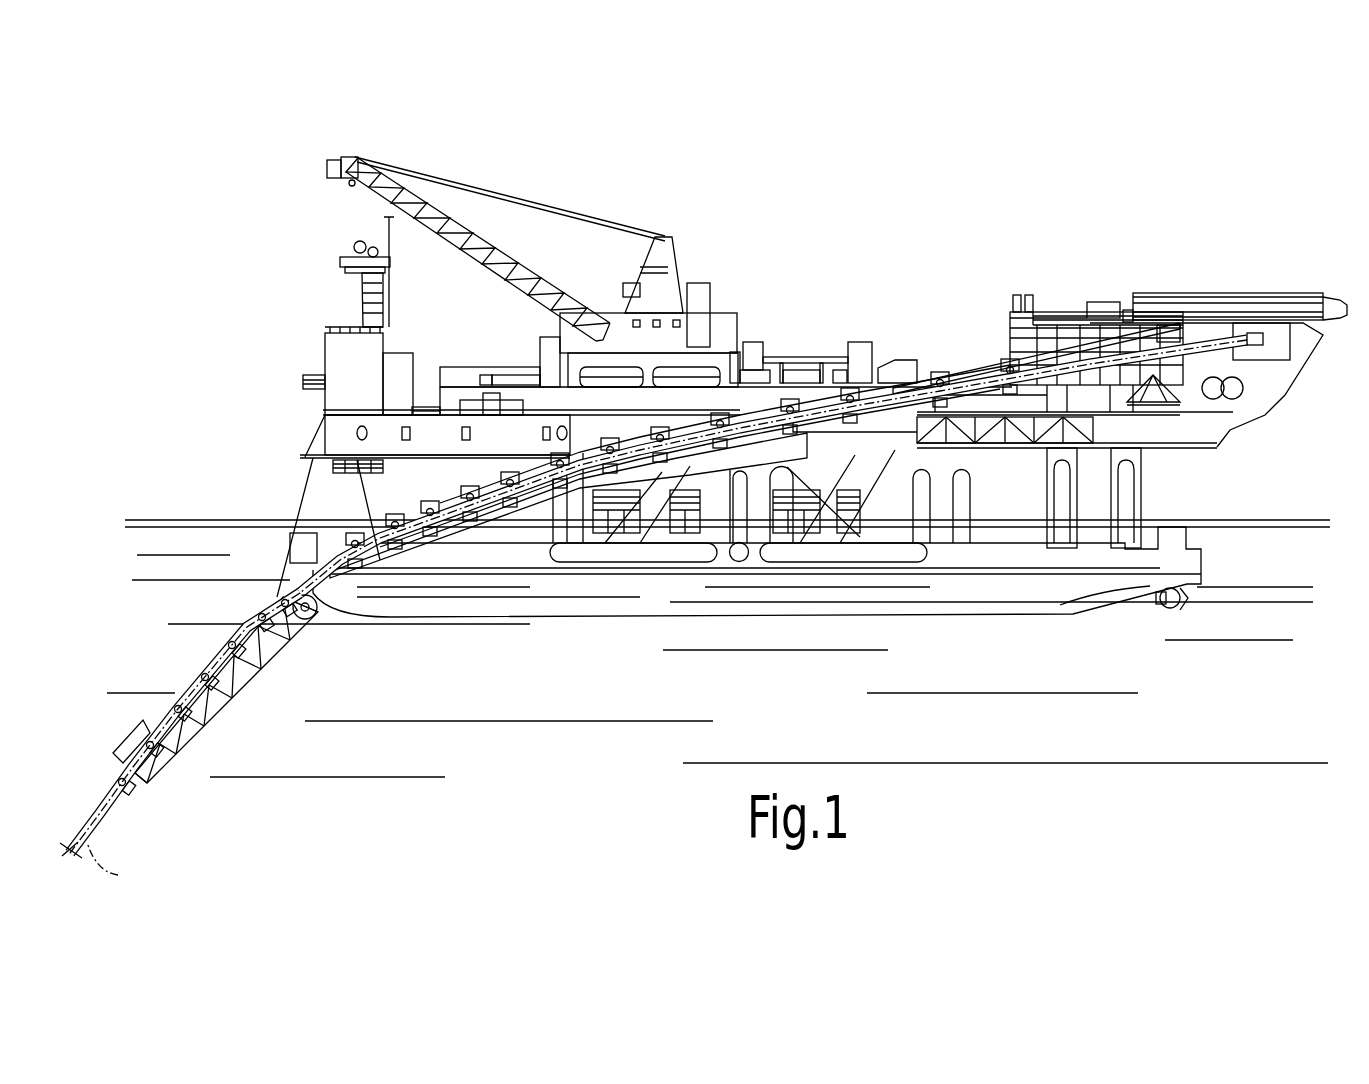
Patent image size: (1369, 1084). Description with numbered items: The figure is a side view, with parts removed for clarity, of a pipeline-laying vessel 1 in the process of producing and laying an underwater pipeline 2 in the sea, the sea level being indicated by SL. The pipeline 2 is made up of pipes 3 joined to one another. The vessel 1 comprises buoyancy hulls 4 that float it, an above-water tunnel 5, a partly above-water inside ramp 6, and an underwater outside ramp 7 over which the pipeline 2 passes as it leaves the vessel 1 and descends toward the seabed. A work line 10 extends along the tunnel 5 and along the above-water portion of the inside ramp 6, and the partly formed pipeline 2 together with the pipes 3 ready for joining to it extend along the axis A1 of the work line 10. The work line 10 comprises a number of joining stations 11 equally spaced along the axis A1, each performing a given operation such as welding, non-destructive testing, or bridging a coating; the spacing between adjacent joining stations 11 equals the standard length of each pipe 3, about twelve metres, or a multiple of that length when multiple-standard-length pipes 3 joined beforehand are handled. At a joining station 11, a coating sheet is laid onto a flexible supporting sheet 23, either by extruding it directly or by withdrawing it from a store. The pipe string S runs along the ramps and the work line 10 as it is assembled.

The pipeline-laying vessel 1 is at (1028, 202).
The underwater pipeline 2 is at (102, 830).
The pipes 3 is at (466, 500).
The buoyancy hulls 4 is at (792, 592).
The above-water tunnel 5 is at (940, 364).
The inside ramp 6 is at (423, 553).
The outside ramp 7 is at (133, 717).
The work line 10 is at (878, 346).
The joining stations 11 is at (940, 367).
The flexible supporting sheet 23 is at (608, 480).
The pipe sections S is at (843, 373).
The sea level SL is at (162, 518).
The axis of work line A1 is at (118, 867).